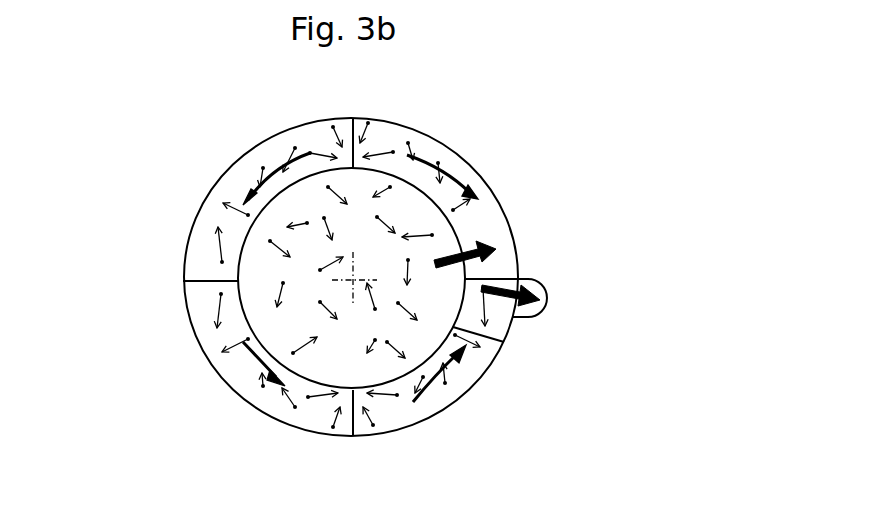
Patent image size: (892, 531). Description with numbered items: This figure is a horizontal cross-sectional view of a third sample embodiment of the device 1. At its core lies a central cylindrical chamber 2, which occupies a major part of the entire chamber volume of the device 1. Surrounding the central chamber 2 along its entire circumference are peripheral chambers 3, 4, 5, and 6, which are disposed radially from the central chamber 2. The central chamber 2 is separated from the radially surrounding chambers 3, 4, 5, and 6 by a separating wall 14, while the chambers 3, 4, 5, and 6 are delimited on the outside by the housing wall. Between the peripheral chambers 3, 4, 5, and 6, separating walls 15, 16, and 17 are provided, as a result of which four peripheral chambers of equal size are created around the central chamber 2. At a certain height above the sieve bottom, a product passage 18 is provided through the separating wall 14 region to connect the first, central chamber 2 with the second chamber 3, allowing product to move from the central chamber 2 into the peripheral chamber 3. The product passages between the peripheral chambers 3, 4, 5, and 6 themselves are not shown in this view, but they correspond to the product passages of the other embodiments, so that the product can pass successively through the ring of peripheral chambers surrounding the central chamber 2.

The device 1 is at (543, 211).
The central cylindrical chamber 2 is at (443, 298).
The peripheral chamber 3 is at (468, 175).
The peripheral chamber 4 is at (243, 168).
The peripheral chamber 5 is at (207, 333).
The peripheral chamber 6 is at (398, 417).
The separating wall 14 is at (415, 160).
The separating wall 15 is at (346, 113).
The separating wall 16 is at (203, 277).
The separating wall 17 is at (355, 417).
The product passage 18 is at (497, 252).